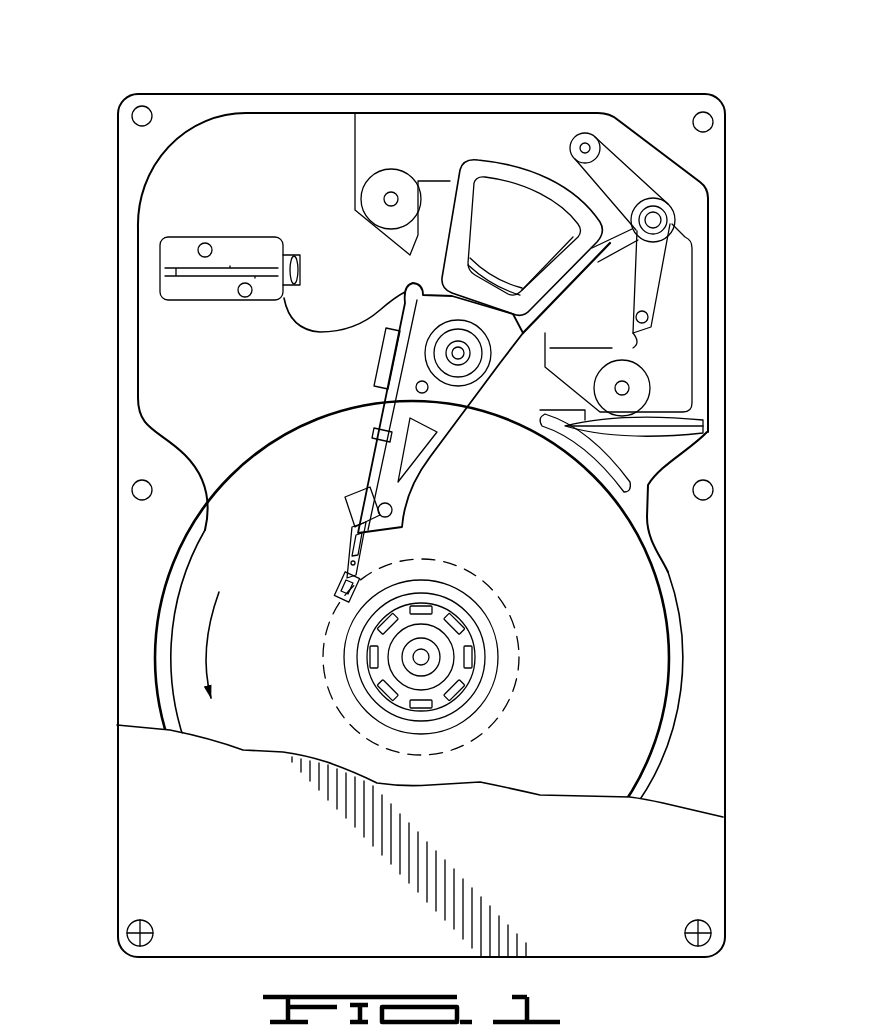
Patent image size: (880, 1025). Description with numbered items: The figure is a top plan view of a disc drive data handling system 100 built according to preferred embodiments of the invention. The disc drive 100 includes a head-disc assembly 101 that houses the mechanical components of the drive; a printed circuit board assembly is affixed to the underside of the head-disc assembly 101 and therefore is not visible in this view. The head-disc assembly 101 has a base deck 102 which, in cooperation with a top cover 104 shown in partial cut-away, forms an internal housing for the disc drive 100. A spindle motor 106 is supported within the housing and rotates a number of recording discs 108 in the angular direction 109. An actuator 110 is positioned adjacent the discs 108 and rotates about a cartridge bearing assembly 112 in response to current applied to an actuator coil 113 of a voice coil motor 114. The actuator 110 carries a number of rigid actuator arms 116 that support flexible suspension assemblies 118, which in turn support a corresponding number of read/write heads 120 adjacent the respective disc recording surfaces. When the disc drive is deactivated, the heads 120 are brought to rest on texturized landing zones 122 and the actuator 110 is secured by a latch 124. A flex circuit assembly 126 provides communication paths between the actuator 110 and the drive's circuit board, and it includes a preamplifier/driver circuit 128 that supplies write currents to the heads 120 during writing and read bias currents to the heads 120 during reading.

The disc drive data handling system 100 is at (172, 54).
The head-disc assembly 101 is at (141, 155).
The base deck 102 is at (160, 368).
The top cover 104 is at (160, 830).
The spindle motor 106 is at (448, 644).
The recording discs 108 is at (650, 657).
The angular direction 109 is at (232, 641).
The actuator 110 is at (421, 323).
The cartridge bearing assembly 112 is at (460, 360).
The actuator coil 113 is at (577, 255).
The voice coil motor 114 is at (485, 158).
The rigid actuator arms 116 is at (427, 460).
The flexible suspension assemblies 118 is at (360, 550).
The read/write heads 120 is at (343, 590).
The texturized landing zones 122 is at (506, 594).
The latch 124 is at (683, 290).
The flex circuit assembly 126 is at (322, 322).
The preamplifier/driver circuit 128 is at (383, 345).